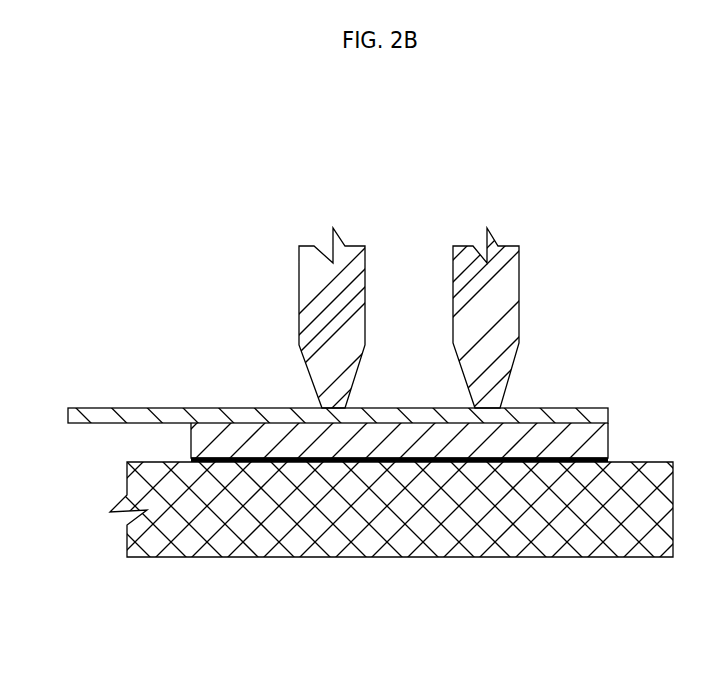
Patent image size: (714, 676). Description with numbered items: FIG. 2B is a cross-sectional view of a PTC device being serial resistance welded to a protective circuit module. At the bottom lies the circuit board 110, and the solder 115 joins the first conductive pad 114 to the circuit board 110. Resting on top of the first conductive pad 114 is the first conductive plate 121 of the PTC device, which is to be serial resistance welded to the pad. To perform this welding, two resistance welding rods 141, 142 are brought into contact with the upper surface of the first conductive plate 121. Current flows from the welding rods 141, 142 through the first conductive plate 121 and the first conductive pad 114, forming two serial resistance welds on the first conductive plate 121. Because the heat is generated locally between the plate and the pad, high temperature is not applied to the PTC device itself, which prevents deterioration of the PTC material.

The circuit board 110 is at (576, 540).
The first conductive pad 114 is at (578, 432).
The solder 115 is at (386, 461).
The first conductive plate 121 is at (133, 408).
The resistance welding rod 141 is at (311, 250).
The resistance welding rod 142 is at (460, 245).